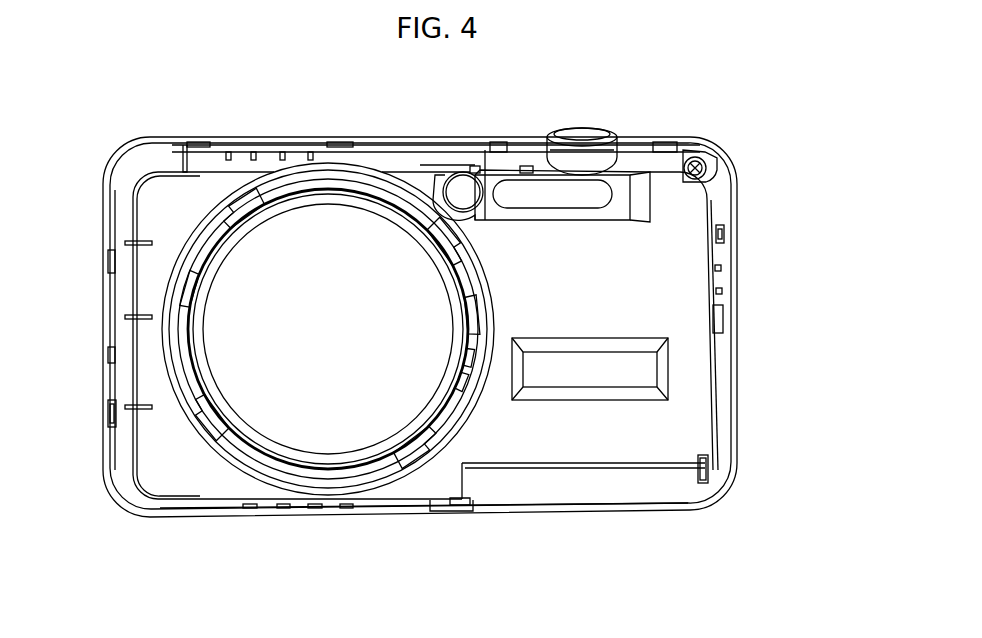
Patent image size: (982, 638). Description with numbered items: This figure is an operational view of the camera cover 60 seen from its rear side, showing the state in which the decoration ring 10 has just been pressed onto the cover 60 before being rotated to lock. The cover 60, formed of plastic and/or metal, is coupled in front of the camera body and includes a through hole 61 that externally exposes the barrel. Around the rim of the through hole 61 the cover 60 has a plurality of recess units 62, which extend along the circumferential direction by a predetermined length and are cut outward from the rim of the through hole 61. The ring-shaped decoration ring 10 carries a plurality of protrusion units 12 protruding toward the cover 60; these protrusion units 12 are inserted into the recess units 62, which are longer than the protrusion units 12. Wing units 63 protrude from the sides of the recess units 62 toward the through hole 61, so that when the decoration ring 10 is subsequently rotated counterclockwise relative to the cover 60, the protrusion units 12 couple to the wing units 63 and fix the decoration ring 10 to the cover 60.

The decoration ring 10 is at (258, 428).
The protrusion units 12 is at (408, 452).
The cover 60 is at (690, 512).
The through hole 61 is at (330, 459).
The recess units 62 is at (428, 437).
The wing units 63 is at (452, 410).